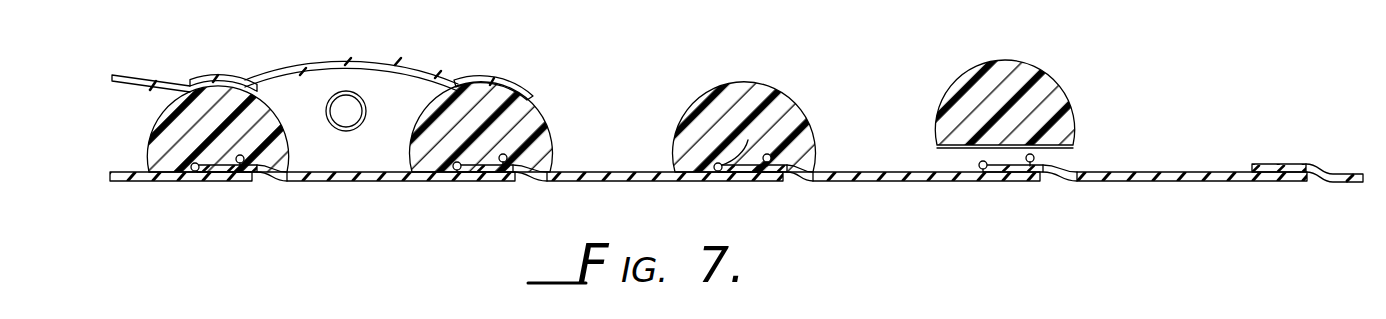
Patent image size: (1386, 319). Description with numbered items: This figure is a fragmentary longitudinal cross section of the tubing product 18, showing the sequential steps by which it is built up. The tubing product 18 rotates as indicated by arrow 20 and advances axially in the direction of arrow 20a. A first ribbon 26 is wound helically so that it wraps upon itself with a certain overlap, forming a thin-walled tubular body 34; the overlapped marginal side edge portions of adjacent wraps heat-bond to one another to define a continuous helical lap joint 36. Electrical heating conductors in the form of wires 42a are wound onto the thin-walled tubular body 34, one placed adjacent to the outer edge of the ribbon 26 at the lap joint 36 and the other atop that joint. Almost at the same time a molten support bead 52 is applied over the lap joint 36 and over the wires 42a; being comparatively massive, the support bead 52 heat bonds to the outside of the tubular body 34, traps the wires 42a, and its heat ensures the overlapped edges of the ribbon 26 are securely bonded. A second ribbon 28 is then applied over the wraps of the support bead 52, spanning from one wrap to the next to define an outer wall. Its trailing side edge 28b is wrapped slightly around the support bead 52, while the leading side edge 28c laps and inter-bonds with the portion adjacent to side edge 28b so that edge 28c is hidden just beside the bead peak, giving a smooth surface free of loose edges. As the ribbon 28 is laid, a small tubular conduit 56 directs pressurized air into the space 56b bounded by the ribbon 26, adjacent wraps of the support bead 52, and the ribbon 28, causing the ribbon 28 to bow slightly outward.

The tubing product 18 is at (225, 48).
The arrow indicating rotation 20 is at (1178, 158).
The arrow indicating axial velocity 20a is at (316, 207).
The ribbon 26 is at (312, 181).
The second ribbon 28 is at (122, 76).
The trailing side edge 28b is at (525, 86).
The leading side edge 28c is at (223, 79).
The thin-walled tubular body 34 is at (1153, 149).
The helical lap joint 36 is at (218, 183).
The wires 42a is at (765, 156).
The support bead 52 is at (540, 137).
The tubular conduit 56 is at (366, 110).
The space 56b is at (372, 158).